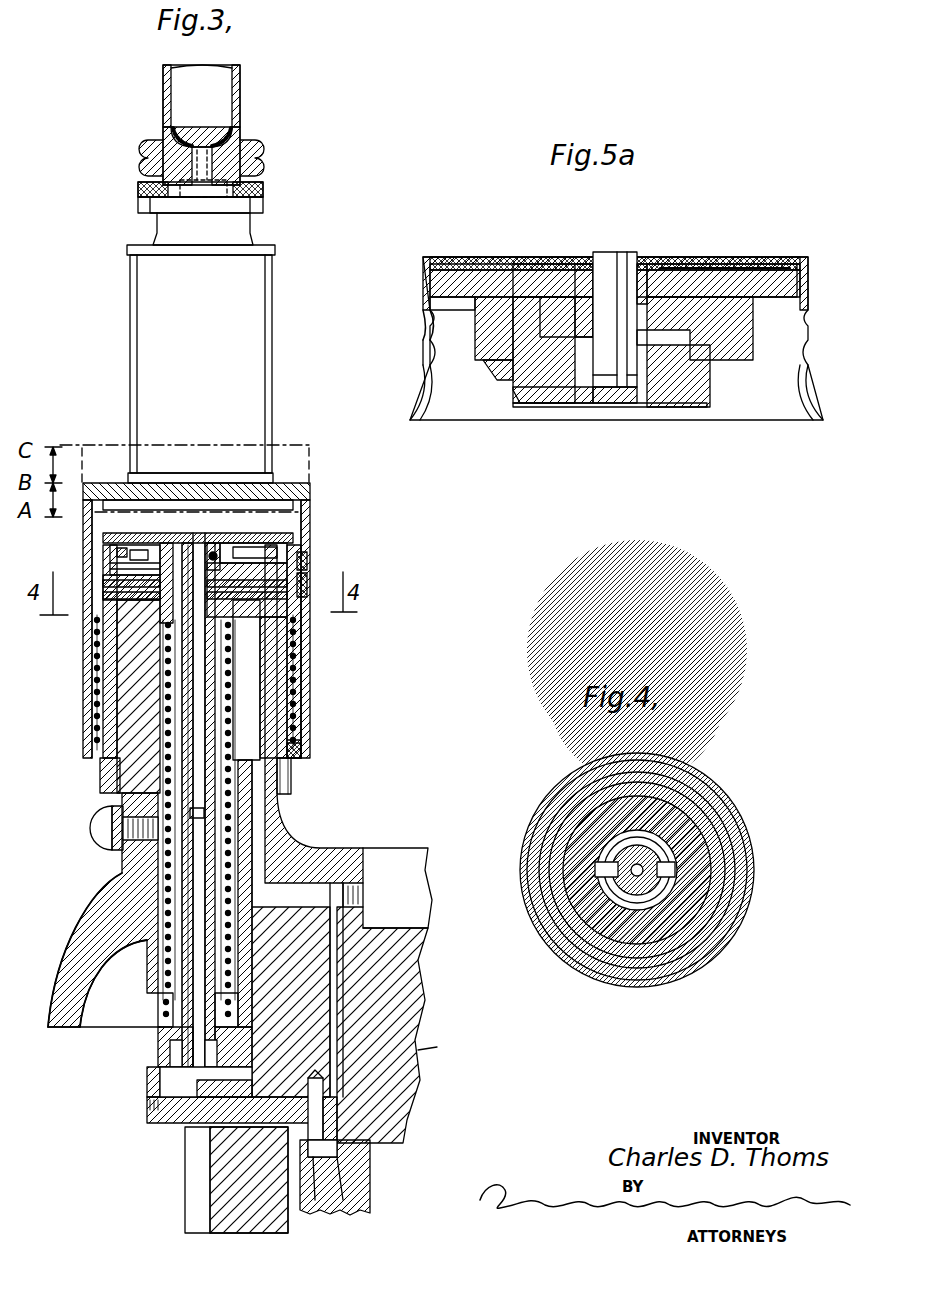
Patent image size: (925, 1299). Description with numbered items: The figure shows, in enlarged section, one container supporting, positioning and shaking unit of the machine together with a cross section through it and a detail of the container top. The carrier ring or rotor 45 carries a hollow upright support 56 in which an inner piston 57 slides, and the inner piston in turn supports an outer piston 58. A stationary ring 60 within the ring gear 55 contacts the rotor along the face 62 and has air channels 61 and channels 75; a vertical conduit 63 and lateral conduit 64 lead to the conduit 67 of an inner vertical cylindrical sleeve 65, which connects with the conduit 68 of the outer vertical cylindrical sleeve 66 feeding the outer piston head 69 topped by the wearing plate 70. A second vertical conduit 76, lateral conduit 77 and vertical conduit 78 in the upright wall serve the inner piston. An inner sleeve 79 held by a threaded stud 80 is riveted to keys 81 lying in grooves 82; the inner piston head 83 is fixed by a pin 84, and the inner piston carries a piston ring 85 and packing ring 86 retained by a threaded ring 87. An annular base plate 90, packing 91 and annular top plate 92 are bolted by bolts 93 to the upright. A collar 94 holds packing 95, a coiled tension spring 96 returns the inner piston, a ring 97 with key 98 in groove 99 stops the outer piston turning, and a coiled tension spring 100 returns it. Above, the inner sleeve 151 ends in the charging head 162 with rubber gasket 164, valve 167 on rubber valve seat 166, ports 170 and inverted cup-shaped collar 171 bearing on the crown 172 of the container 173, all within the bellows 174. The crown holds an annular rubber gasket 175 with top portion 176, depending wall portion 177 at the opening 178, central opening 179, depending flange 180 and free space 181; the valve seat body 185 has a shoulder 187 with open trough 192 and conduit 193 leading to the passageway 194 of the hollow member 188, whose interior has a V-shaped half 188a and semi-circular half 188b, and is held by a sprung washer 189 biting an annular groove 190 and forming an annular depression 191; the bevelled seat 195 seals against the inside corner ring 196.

In FIG. 3, the inner sleeve 151 is at (243, 105).
In FIG. 3, the rubber valve seat 166 is at (236, 134).
In FIG. 3, the valve 167 is at (201, 127).
In FIG. 3, the ports 170 is at (153, 152).
In FIG. 3, the bellows 174 is at (258, 155).
In FIG. 3, the rubber gasket 164 is at (263, 192).
In FIG. 3, the charging head 162 is at (263, 208).
In FIG. 3, the inverted cup-shaped collar 171 is at (190, 198).
In FIG. 3, the crown 172 is at (200, 214).
In FIG. 5A, the crown 172 is at (485, 258).
In FIG. 3, the container 173 is at (130, 320).
In FIG. 5A, the container 173 is at (430, 402).
In FIG. 3, the wearing plate 70 is at (296, 503).
In FIG. 3, the outer piston head 69 is at (302, 490).
In FIG. 3, the inner piston head 83 is at (297, 540).
In FIG. 3, the annular base plate 90 is at (100, 612).
In FIG. 3, the coiled tension spring 100 is at (303, 665).
In FIG. 4, the coiled tension spring 100 is at (740, 903).
In FIG. 3, the outer piston 58 is at (118, 704).
In FIG. 3, the annular top plate 92 is at (113, 577).
In FIG. 3, the bolts 93 is at (130, 570).
In FIG. 3, the threaded ring 87 is at (300, 620).
In FIG. 3, the packing 91 is at (95, 578).
In FIG. 3, the keys 81 is at (170, 610).
In FIG. 4, the keys 81 is at (673, 855).
In FIG. 3, the grooves 82 is at (175, 715).
In FIG. 4, the grooves 82 is at (673, 797).
In FIG. 3, the pin 84 is at (218, 560).
In FIG. 3, the piston ring 85 is at (300, 562).
In FIG. 3, the packing ring 86 is at (305, 585).
In FIG. 3, the inner piston 57 is at (310, 640).
In FIG. 3, the vertical conduit 78 is at (262, 720).
In FIG. 3, the key 98 is at (302, 736).
In FIG. 3, the ring 97 is at (302, 756).
In FIG. 3, the groove 99 is at (292, 775).
In FIG. 3, the conduit 68 is at (240, 775).
In FIG. 4, the conduit 68 is at (640, 877).
In FIG. 3, the conduit 67 is at (230, 853).
In FIG. 3, the lateral conduit 77 is at (307, 888).
In FIG. 3, the vertical conduit 76 is at (403, 1007).
In FIG. 3, the carrier ring 45 is at (67, 1020).
In FIG. 3, the hollow upright support 56 is at (110, 867).
In FIG. 3, the coiled tension spring 96 is at (172, 950).
In FIG. 4, the coiled tension spring 96 is at (607, 840).
In FIG. 3, the inner sleeve 79 is at (110, 812).
In FIG. 4, the inner sleeve 79 is at (680, 887).
In FIG. 3, the threaded stud 80 is at (130, 826).
In FIG. 3, the outer vertical cylindrical sleeve 66 is at (185, 883).
In FIG. 4, the outer vertical cylindrical sleeve 66 is at (650, 887).
In FIG. 3, the inner vertical cylindrical sleeve 65 is at (190, 1007).
In FIG. 3, the collar 94 is at (165, 1033).
In FIG. 3, the packing 95 is at (163, 1063).
In FIG. 3, the face 62 is at (372, 1124).
In FIG. 3, the vertical conduit 63 is at (320, 1088).
In FIG. 3, the lateral conduit 64 is at (232, 1128).
In FIG. 3, the ring gear 55 is at (185, 1207).
In FIG. 3, the stationary ring 60 is at (372, 1198).
In FIG. 3, the air channel 61 is at (313, 1160).
In FIG. 3, the channel 75 is at (337, 1160).
In FIG. 5A, the annular top portion 176 is at (455, 268).
In FIG. 5A, the opening 178 is at (427, 312).
In FIG. 5A, the annular rubber gasket 175 is at (465, 340).
In FIG. 5A, the free space 181 is at (513, 273).
In FIG. 5A, the annular depending flange 180 is at (560, 273).
In FIG. 5A, the central opening 179 is at (570, 273).
In FIG. 5A, the vertically extending hollow member 188 is at (607, 253).
In FIG. 5A, the semi-circular half-portion 188b is at (605, 388).
In FIG. 5A, the V-shaped half-portion 188a is at (630, 380).
In FIG. 5A, the annular groove 190 is at (630, 270).
In FIG. 5A, the sprung washer 189 is at (670, 270).
In FIG. 5A, the annular depression 191 is at (685, 270).
In FIG. 5A, the open trough 192 is at (688, 327).
In FIG. 5A, the conduit 193 is at (645, 335).
In FIG. 5A, the annular shoulder portion 187 is at (537, 313).
In FIG. 5A, the inside corner ring 196 is at (507, 320).
In FIG. 5A, the bevelled seat 195 is at (523, 367).
In FIG. 5A, the depending wall portion 177 is at (483, 363).
In FIG. 5A, the valve seat body 185 is at (563, 410).
In FIG. 5A, the passageway 194 is at (603, 380).